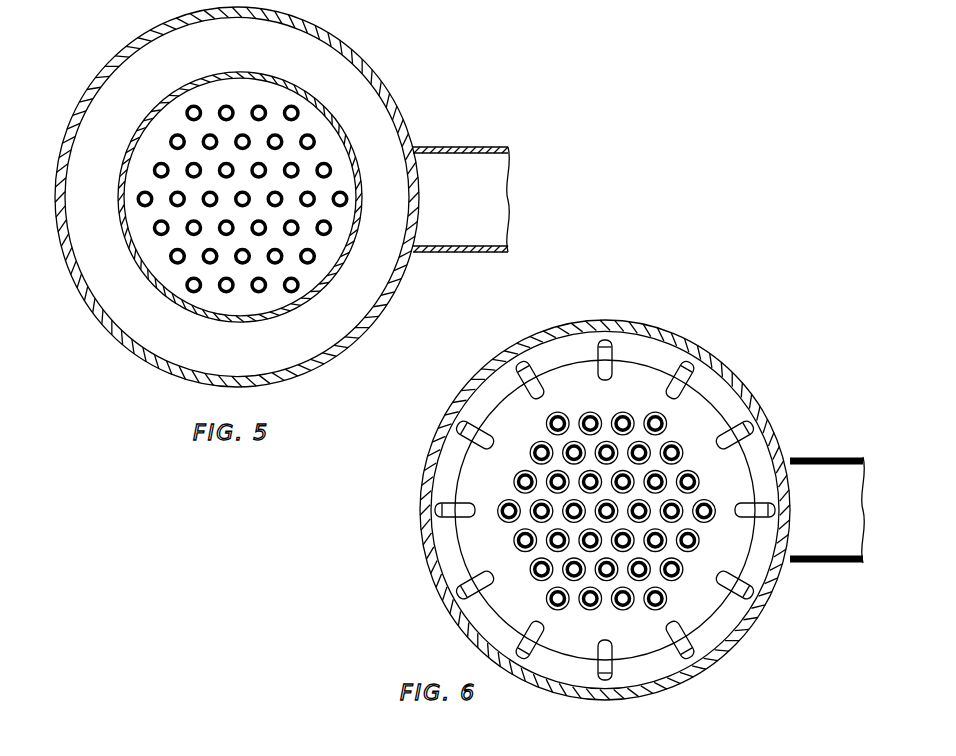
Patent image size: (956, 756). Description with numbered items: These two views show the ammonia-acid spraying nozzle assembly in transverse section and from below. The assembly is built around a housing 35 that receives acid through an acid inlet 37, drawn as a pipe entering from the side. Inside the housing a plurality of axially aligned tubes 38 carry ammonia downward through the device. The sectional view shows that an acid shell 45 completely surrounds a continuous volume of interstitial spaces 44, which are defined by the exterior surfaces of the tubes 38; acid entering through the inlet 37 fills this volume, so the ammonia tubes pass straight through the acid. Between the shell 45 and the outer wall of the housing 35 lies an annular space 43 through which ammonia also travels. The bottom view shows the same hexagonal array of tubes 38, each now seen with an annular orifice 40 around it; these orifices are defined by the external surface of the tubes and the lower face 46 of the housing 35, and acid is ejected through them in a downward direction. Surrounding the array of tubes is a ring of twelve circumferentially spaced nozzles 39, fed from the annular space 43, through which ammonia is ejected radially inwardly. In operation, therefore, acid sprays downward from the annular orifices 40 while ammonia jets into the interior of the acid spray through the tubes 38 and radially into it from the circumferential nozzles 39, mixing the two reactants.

In FIG. 5, the housing 35 is at (378, 322).
In FIG. 6, the housing 35 is at (422, 526).
In FIG. 5, the acid inlet 37 is at (467, 253).
In FIG. 6, the acid inlet 37 is at (820, 467).
In FIG. 5, the tubes 38 is at (258, 104).
In FIG. 6, the tubes 38 is at (550, 602).
In FIG. 6, the nozzles 39 is at (613, 343).
In FIG. 6, the annular orifices 40 is at (684, 447).
In FIG. 5, the annular space 43 is at (113, 122).
In FIG. 5, the interstitial spaces 44 is at (162, 270).
In FIG. 5, the shell 45 is at (350, 123).
In FIG. 6, the lower face 46 is at (478, 463).